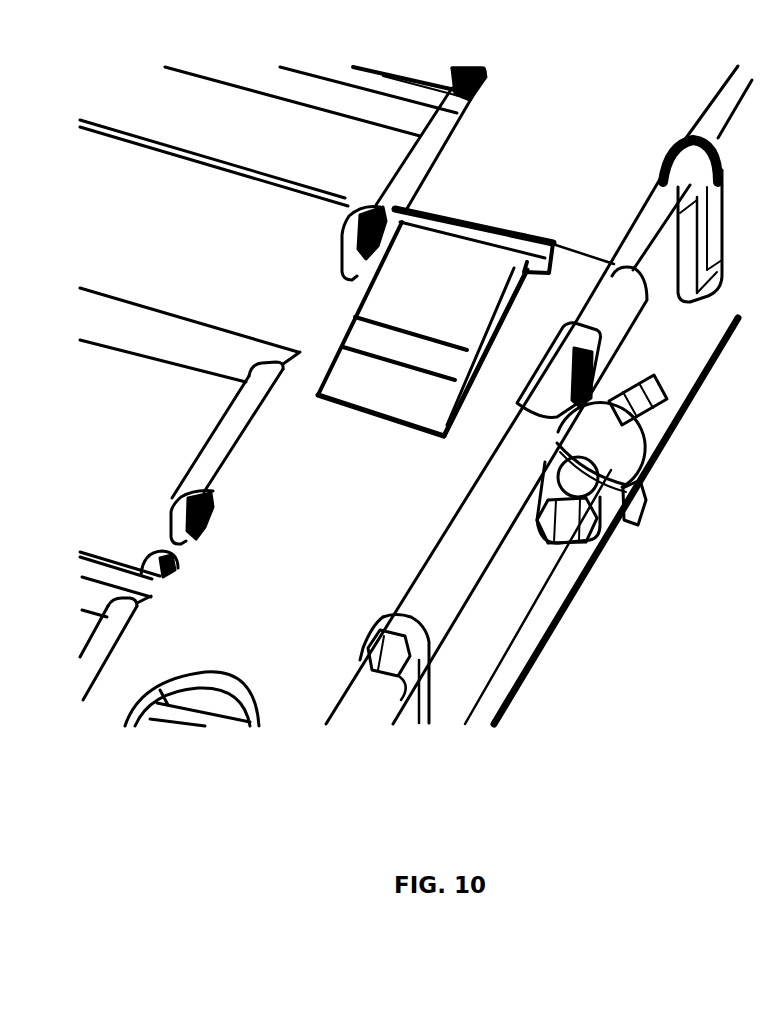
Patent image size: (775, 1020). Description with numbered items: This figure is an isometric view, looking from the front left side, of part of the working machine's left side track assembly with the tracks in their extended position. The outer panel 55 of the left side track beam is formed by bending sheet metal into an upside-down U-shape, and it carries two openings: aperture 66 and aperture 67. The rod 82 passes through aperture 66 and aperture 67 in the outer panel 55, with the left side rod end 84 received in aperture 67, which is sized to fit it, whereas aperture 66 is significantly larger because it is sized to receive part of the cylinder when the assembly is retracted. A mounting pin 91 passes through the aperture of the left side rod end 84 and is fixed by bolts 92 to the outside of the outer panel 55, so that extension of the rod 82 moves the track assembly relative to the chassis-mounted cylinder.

The outer panel 55 is at (516, 603).
The aperture 66 is at (344, 262).
The aperture 67 is at (598, 360).
The rod 82 is at (185, 350).
The left side rod end 84 is at (621, 447).
The mounting pin 91 is at (641, 377).
The bolts 92 is at (665, 418).